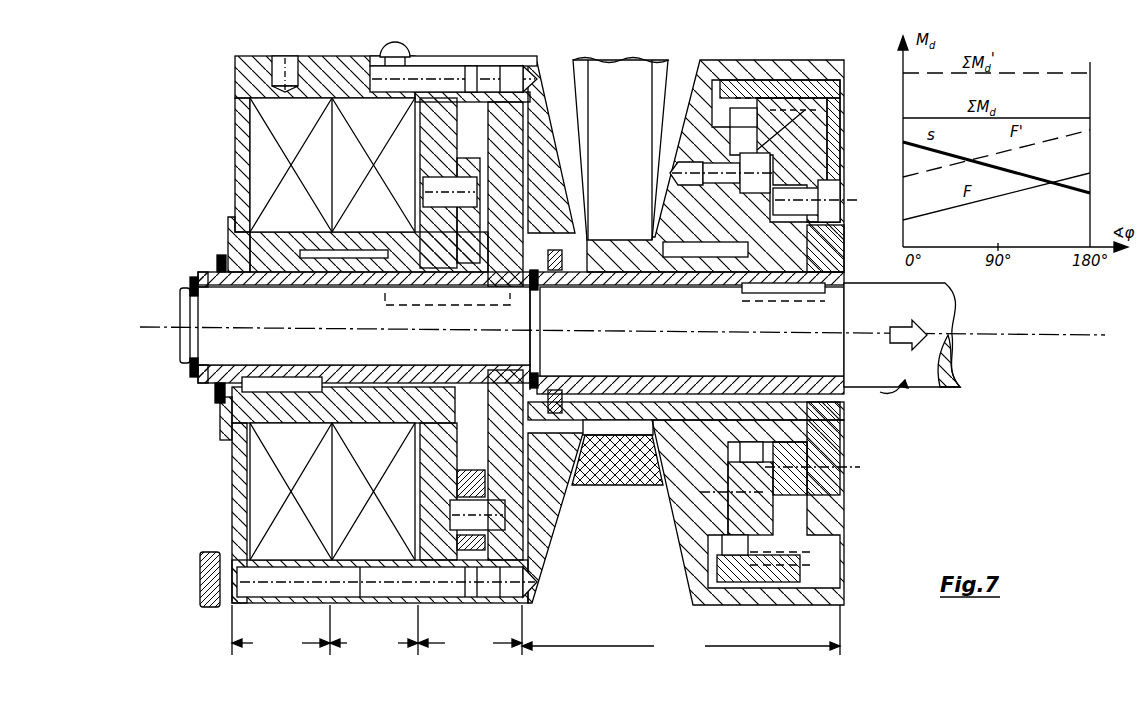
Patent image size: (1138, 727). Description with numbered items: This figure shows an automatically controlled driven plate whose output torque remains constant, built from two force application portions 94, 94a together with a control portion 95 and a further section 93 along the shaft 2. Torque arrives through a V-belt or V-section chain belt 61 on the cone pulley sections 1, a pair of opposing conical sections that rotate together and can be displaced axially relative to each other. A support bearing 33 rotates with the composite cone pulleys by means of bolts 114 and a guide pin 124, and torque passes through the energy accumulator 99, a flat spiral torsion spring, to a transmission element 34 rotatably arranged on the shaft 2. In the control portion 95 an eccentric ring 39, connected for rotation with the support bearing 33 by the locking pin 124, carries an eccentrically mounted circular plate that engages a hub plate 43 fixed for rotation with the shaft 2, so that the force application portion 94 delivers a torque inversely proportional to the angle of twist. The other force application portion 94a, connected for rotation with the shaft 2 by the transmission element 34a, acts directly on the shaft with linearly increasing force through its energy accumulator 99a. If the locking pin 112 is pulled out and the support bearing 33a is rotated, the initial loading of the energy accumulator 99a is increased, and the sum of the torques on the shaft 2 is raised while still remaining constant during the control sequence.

The cone pulley sections 1 is at (683, 520).
The shaft 2 is at (855, 373).
The support bearing 33 is at (423, 63).
The support bearing 33a is at (262, 53).
The transmission element 34 is at (433, 143).
The transmission element 34a is at (237, 242).
The eccentric ring 39 is at (478, 63).
The hub plate 43 is at (507, 137).
The V-belt or V-section chain belt 61 is at (627, 80).
The energy accumulator 99 is at (292, 491).
The energy accumulator 99a is at (350, 493).
The locking pin 112 is at (208, 552).
The bolts 114 is at (517, 78).
The locking pin 124 is at (383, 73).
The dimension 93 is at (681, 634).
The force application portion 94 is at (374, 632).
The force application portion 94a is at (281, 632).
The control portion 95 is at (470, 632).